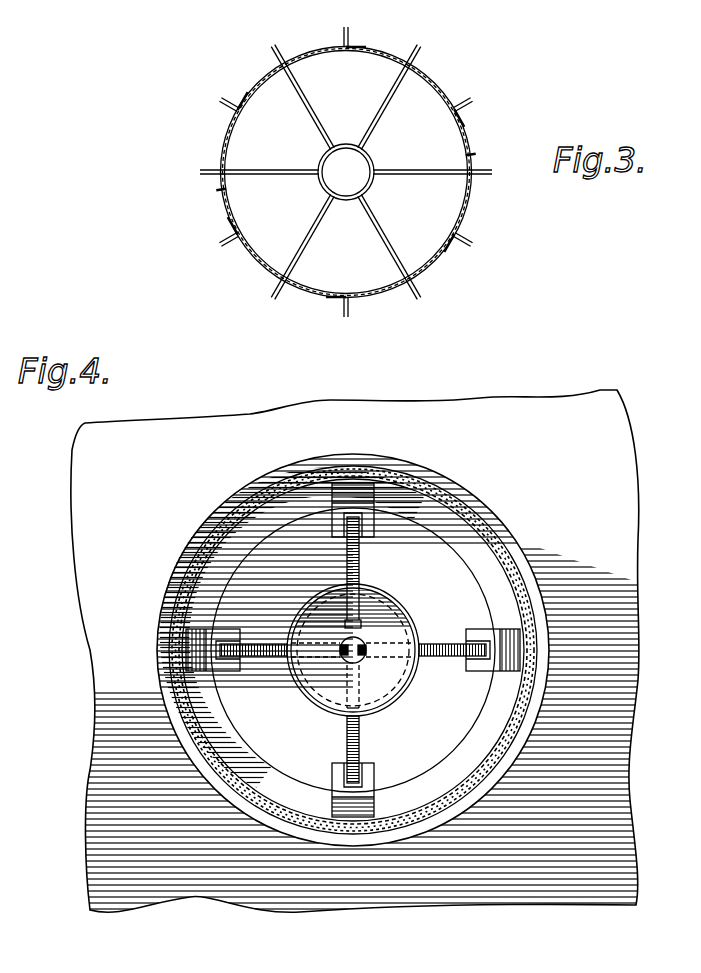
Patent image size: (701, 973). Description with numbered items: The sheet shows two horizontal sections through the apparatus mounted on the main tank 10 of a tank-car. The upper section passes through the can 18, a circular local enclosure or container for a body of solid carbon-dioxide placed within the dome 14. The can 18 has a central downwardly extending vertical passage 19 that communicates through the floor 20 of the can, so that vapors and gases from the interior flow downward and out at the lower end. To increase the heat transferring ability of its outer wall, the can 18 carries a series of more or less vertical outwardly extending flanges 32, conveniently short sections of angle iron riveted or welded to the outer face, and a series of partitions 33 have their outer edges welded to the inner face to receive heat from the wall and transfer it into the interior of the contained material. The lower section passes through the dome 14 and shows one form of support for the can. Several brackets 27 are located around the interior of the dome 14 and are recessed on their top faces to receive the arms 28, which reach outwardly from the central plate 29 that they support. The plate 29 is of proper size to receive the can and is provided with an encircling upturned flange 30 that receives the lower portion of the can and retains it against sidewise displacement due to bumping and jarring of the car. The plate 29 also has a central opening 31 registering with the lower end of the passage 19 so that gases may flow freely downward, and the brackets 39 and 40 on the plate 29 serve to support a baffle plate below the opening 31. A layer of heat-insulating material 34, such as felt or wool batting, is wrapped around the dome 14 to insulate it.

In FIG. 4, the main tank 10 is at (541, 416).
In FIG. 4, the dome 14 is at (517, 566).
In FIG. 3, the can 18 is at (222, 204).
In FIG. 3, the central vertical passage 19 is at (335, 180).
In FIG. 3, the floor of the can 20 is at (419, 204).
In FIG. 4, the brackets 27 is at (335, 513).
In FIG. 4, the arms 28 is at (348, 557).
In FIG. 4, the central plate 29 is at (353, 650).
In FIG. 4, the upturned flange 30 is at (323, 708).
In FIG. 4, the central opening 31 is at (362, 658).
In FIG. 3, the outwardly extending flanges 32 is at (272, 47).
In FIG. 3, the partitions 33 is at (377, 120).
In FIG. 4, the layer of heat-insulating material 34 is at (178, 628).
In FIG. 4, the bracket 39 is at (289, 668).
In FIG. 4, the bracket 40 is at (375, 642).